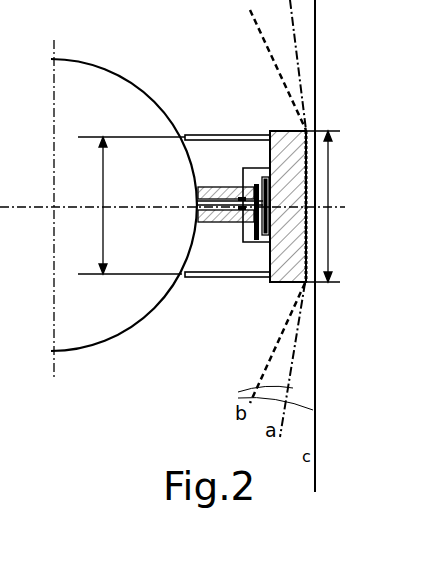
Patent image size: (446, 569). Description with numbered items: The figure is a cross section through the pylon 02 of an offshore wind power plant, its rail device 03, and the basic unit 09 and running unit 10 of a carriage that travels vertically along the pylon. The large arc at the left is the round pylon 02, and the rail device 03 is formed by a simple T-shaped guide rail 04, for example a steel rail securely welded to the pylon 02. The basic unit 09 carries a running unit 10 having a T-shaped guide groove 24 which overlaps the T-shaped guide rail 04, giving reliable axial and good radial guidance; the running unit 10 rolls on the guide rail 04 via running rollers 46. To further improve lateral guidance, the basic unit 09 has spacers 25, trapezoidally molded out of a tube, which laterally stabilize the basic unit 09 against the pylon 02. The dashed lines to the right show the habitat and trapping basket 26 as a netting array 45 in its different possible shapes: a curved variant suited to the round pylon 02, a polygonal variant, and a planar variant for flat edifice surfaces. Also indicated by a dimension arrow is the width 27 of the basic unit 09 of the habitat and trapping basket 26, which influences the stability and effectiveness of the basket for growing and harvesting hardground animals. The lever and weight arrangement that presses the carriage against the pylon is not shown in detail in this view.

The pylon 02 is at (78, 78).
The rail device 03 is at (222, 82).
The T-shaped guide rail 04 is at (196, 207).
The basic unit 09 is at (293, 140).
The running unit 10 is at (250, 238).
The T-shaped guide groove 24 is at (265, 242).
The spacers 25 is at (228, 135).
The habitat and trapping basket 26 is at (243, 379).
The width 27 is at (337, 148).
The netting array 45 is at (262, 392).
The running rollers 46 is at (237, 210).